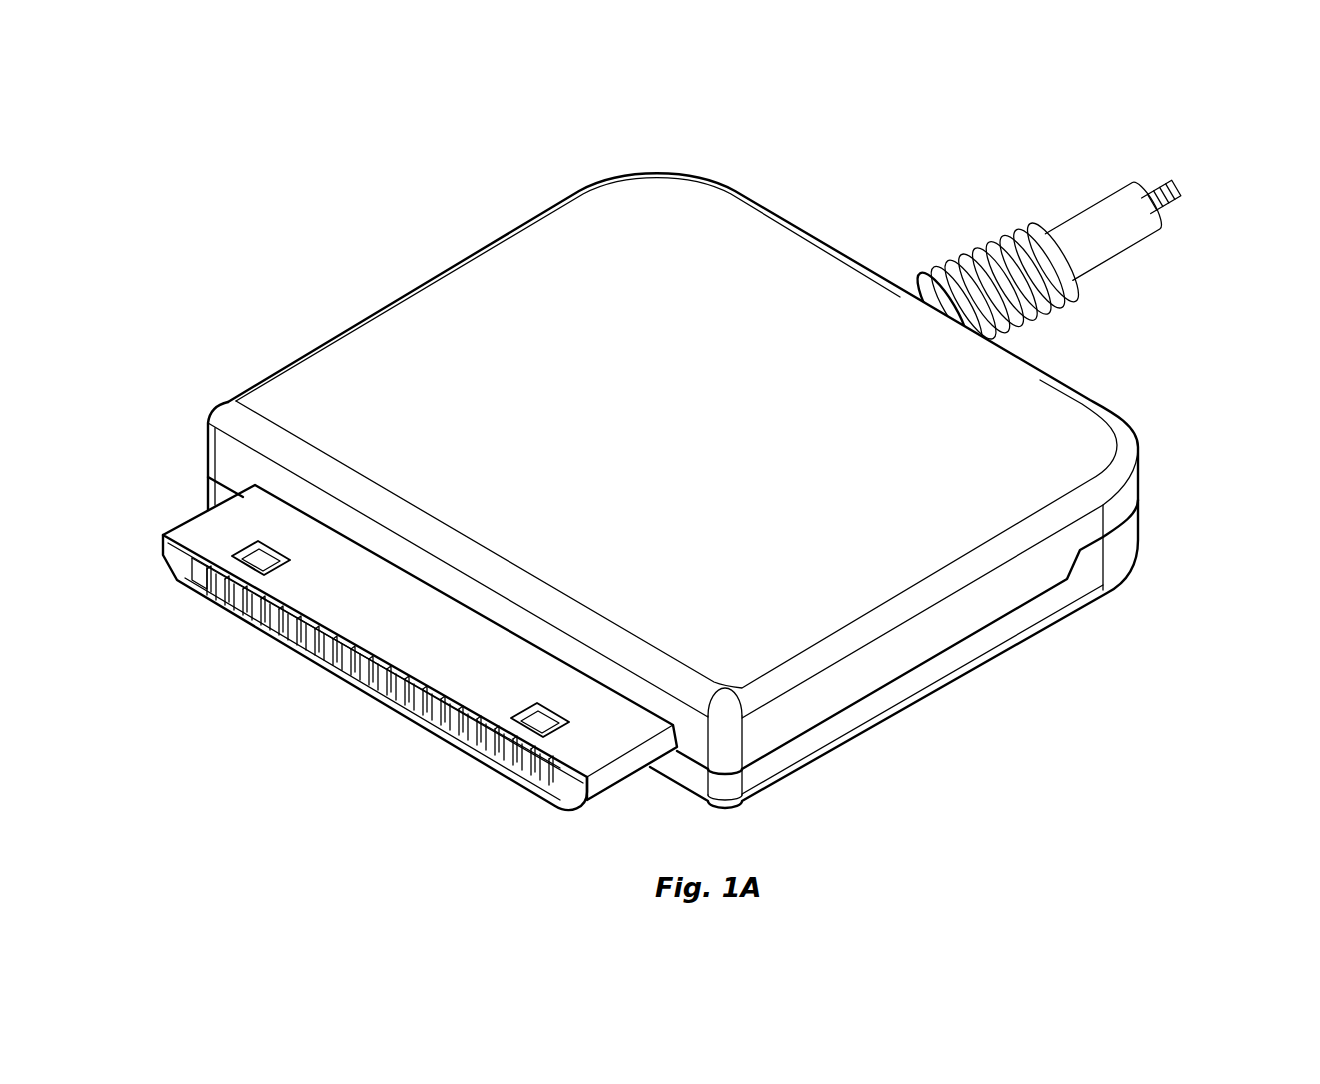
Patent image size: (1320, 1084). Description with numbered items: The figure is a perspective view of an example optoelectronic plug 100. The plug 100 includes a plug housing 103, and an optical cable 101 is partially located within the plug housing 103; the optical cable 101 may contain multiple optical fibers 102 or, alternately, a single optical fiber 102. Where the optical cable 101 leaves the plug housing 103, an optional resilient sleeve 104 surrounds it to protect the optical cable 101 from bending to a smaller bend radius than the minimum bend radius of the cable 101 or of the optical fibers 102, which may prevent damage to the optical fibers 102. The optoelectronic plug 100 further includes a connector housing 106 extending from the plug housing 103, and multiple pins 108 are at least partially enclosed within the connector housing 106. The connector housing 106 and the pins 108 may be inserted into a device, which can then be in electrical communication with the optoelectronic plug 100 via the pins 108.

The optoelectronic plug 100 is at (293, 160).
The optical cable 101 is at (1147, 184).
The optical fibers 102 is at (1177, 203).
The plug housing 103 is at (699, 429).
The resilient sleeve 104 is at (1013, 222).
The connector housing 106 is at (610, 790).
The pins 108 is at (405, 728).